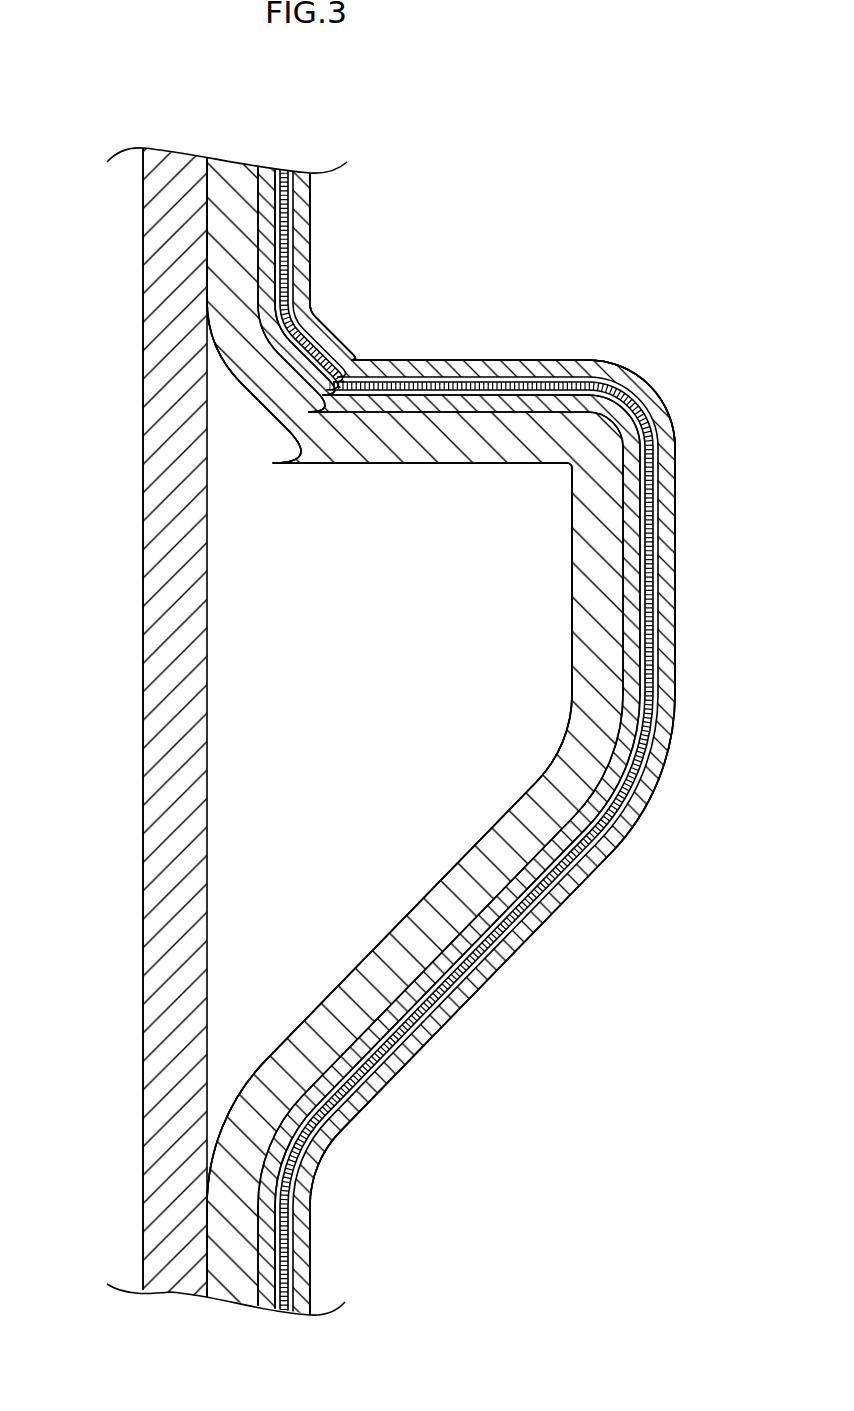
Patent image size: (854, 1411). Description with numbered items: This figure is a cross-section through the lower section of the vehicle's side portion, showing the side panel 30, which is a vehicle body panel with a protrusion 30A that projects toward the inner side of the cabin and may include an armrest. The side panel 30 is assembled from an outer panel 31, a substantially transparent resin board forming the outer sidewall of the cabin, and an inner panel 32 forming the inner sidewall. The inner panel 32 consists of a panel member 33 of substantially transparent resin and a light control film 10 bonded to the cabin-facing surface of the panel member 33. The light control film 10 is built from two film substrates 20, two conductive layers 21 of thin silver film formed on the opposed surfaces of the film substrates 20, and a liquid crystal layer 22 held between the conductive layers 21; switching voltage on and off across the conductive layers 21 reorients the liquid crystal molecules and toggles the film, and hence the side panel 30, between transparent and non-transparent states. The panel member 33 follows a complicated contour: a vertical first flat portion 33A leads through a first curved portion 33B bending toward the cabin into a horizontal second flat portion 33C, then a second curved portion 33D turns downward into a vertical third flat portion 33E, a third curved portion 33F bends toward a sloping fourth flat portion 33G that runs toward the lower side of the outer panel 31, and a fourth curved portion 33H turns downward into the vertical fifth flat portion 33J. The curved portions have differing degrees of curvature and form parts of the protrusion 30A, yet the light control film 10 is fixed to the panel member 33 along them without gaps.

The side panel 30 is at (363, 193).
The protrusion 30A is at (655, 387).
The outer panel 31 is at (177, 263).
The inner panel 32 is at (420, 242).
The panel member 33 is at (580, 408).
The first flat portion 33A is at (228, 207).
The first curved portion 33B is at (253, 395).
The second flat portion 33C is at (438, 448).
The second curved portion 33D is at (588, 457).
The third flat portion 33E is at (598, 579).
The third curved portion 33F is at (583, 747).
The fourth flat portion 33G is at (442, 925).
The fourth curved portion 33H is at (242, 1152).
The fifth flat portion 33J is at (227, 1273).
The light control film 10 is at (545, 295).
The film substrate 20 is at (527, 405).
The conductive layer 21 is at (485, 387).
The liquid crystal layer 22 is at (446, 390).